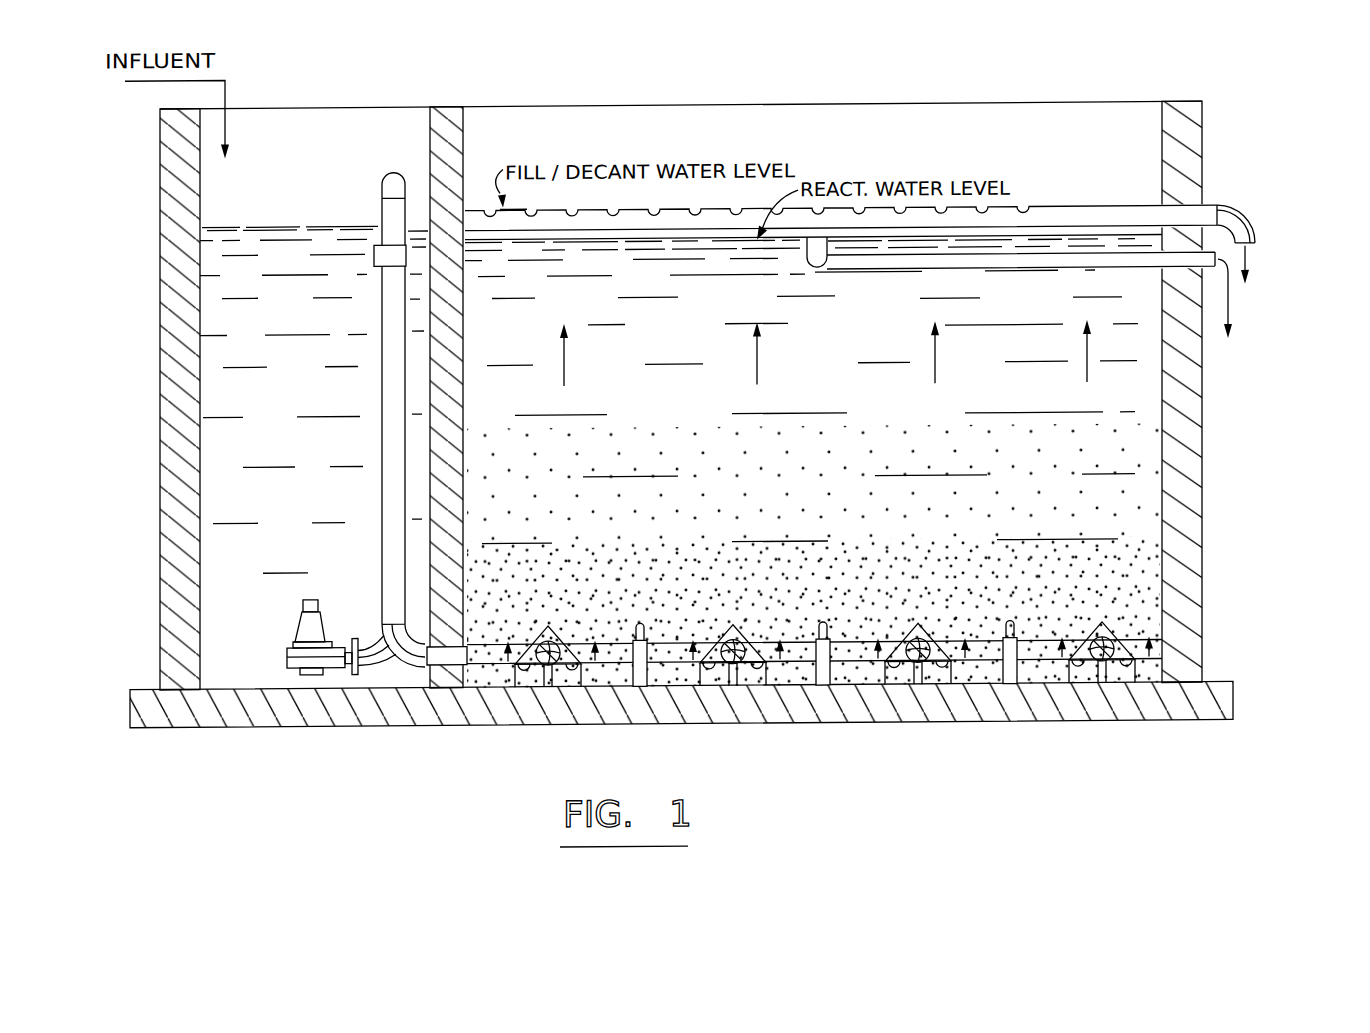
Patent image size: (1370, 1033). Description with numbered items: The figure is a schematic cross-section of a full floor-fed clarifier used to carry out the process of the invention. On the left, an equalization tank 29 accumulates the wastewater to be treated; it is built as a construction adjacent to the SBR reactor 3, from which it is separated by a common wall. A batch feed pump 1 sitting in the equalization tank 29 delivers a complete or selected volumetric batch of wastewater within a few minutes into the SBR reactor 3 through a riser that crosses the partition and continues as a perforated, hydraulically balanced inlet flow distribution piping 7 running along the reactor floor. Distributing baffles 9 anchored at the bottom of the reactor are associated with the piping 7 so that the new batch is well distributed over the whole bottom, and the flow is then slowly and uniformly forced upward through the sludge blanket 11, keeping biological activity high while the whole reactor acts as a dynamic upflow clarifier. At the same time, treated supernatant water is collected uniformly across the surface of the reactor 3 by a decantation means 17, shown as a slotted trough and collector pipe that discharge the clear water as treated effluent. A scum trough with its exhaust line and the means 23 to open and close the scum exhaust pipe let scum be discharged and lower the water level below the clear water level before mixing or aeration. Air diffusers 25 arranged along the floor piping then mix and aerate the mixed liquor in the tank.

The batch feed pump 1 is at (328, 614).
The SBR reactor 3 is at (466, 140).
The inlet flow distribution piping 7 is at (502, 641).
The distributing baffles 9 is at (553, 627).
The sludge blanket 11 is at (830, 466).
The decantation means 17 is at (1077, 209).
The means to open and close the scum exhaust pipe 23 is at (1213, 271).
The air diffusers 25 is at (838, 690).
The equalization tank 29 is at (300, 320).